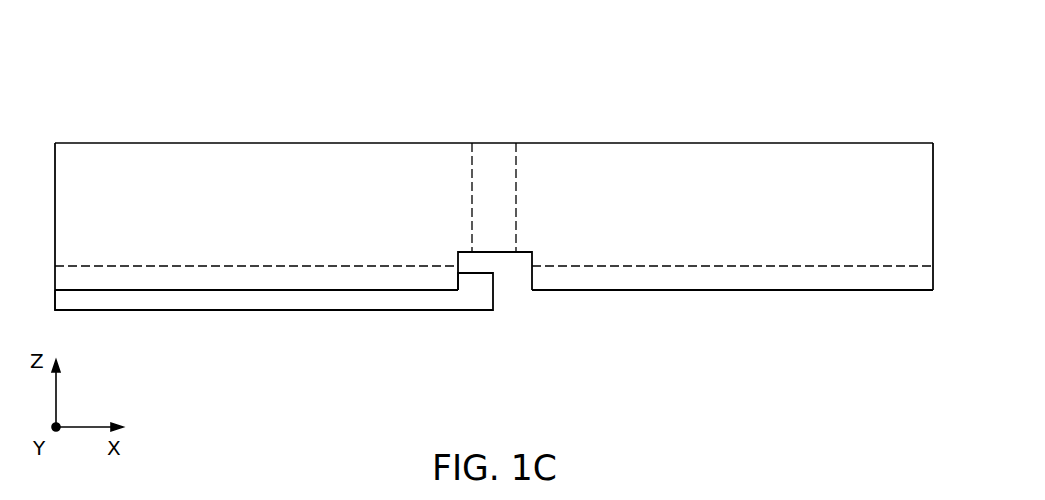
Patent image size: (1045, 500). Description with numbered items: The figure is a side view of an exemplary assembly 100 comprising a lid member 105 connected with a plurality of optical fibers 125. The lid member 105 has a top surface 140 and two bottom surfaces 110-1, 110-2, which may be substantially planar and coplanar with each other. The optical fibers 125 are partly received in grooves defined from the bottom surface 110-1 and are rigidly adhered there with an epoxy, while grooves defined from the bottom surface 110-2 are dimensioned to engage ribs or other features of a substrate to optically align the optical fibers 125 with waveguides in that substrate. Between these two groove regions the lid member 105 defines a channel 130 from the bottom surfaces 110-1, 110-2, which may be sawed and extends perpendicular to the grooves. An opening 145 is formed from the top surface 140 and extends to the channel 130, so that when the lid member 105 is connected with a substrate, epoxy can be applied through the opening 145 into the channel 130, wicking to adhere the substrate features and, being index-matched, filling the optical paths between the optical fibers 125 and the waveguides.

The assembly 100 is at (160, 82).
The lid member 105 is at (270, 115).
The bottom surface 110-1 is at (166, 302).
The bottom surface 110-2 is at (747, 303).
The optical fibers 125 is at (287, 323).
The channel 130 is at (525, 304).
The top surface 140 is at (842, 131).
The opening 145 is at (493, 157).